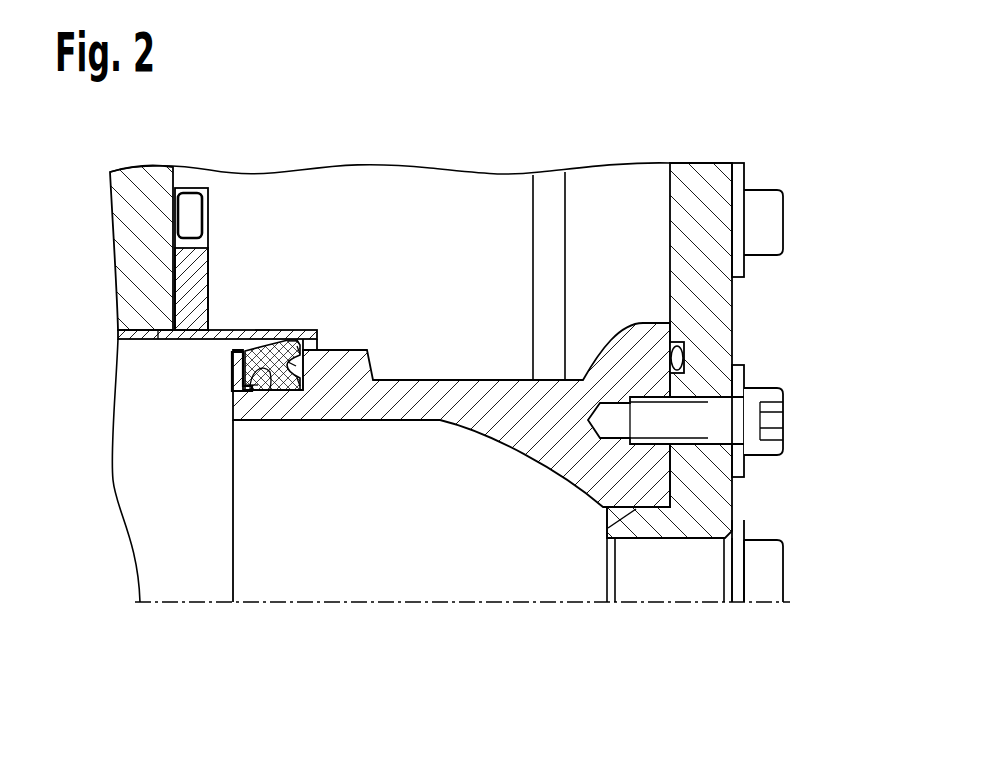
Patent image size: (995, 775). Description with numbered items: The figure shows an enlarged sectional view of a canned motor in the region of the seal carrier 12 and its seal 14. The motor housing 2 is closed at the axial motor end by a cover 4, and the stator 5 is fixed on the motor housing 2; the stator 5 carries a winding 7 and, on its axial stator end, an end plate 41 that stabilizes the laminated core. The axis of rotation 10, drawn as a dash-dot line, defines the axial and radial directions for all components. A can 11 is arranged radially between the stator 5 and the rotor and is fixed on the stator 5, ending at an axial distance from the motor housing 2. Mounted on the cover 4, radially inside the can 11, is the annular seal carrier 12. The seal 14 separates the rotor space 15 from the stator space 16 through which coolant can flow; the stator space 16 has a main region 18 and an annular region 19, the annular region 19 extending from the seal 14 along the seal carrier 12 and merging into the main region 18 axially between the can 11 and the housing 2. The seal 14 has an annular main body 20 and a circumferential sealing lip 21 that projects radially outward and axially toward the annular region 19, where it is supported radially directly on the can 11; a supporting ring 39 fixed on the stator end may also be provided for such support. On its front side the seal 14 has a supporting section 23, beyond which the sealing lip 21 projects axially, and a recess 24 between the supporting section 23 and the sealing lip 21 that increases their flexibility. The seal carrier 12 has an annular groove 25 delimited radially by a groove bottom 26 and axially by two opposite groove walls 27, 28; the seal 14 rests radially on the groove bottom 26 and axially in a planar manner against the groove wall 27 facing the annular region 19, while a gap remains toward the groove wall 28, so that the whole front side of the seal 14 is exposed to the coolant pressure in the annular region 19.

The motor housing 2 is at (737, 299).
The cover 4 is at (713, 350).
The stator 5 is at (136, 193).
The winding 7 is at (210, 200).
The axis of rotation 10 is at (553, 606).
The can 11 is at (143, 326).
The seal carrier 12 is at (489, 434).
The seal 14 is at (270, 394).
The rotor space 15 is at (177, 468).
The stator space 16 is at (337, 232).
The main region 18 is at (465, 284).
The annular region 19 is at (319, 348).
The main body 20 is at (245, 386).
The sealing lip 21 is at (294, 343).
The supporting section 23 is at (288, 394).
The recess 24 is at (301, 382).
The annular groove 25 is at (255, 395).
The groove bottom 26 is at (245, 364).
The groove wall 27 is at (236, 398).
The groove wall 28 is at (318, 346).
The supporting ring 39 is at (262, 332).
The end plate 41 is at (206, 214).